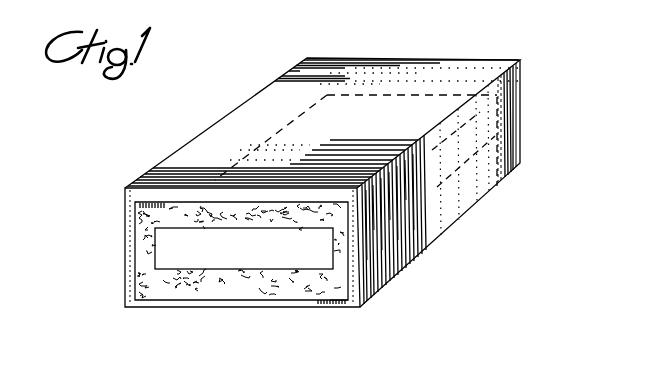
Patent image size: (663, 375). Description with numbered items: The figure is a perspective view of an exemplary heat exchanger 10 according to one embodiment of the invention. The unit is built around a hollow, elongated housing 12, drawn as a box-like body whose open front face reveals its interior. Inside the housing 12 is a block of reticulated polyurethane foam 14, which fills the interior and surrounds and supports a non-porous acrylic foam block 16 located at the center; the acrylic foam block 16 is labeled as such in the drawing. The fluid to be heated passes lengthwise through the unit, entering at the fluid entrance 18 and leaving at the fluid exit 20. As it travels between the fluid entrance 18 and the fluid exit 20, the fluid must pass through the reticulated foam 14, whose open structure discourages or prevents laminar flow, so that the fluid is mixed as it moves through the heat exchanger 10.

The heat exchanger 10 is at (455, 51).
The housing 12 is at (522, 108).
The block of reticulated polyurethane foam 14 is at (341, 275).
The non-porous acrylic foam block 16 is at (197, 195).
The fluid entrance 18 is at (138, 220).
The fluid exit 20 is at (512, 82).